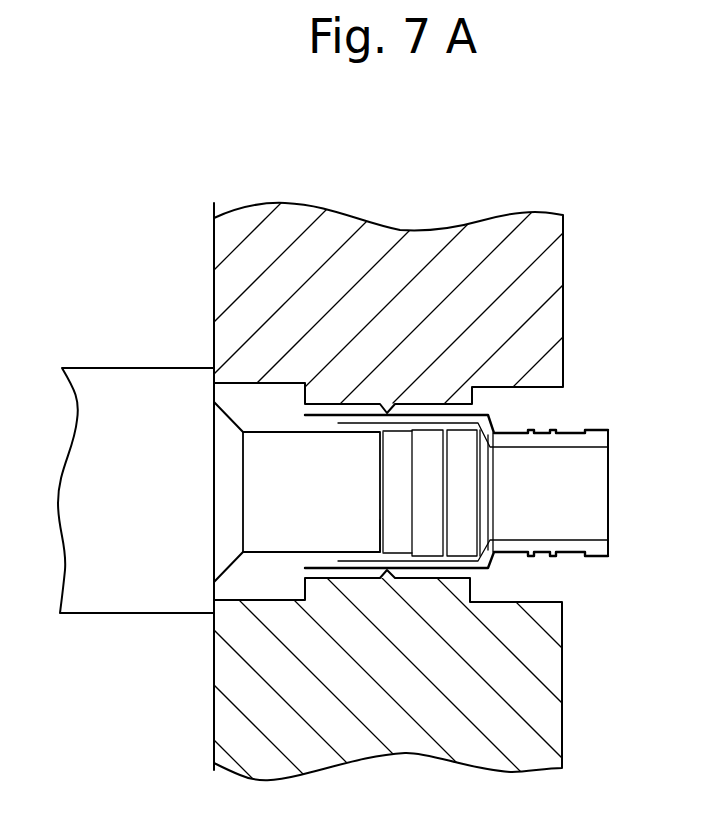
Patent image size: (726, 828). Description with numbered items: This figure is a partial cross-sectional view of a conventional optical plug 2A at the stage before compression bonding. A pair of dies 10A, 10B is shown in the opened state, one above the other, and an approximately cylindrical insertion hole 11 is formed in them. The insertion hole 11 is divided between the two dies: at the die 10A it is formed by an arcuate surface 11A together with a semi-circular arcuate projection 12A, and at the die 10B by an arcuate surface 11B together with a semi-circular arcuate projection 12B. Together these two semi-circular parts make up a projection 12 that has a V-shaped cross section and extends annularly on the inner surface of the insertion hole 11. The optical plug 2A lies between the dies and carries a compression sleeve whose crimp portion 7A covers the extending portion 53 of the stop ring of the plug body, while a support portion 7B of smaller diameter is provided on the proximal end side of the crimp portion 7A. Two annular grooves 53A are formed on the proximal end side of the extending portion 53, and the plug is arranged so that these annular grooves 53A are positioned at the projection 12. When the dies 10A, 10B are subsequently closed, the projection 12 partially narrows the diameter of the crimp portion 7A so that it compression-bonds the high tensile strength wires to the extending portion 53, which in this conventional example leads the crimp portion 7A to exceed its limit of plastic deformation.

The optical plug 2A is at (586, 497).
The crimp portion 7A is at (470, 568).
The support portion 7B is at (596, 432).
The die 10A is at (556, 248).
The die 10B is at (553, 706).
The insertion hole 11 is at (333, 404).
The arcuate surface 11A is at (338, 408).
The arcuate surface 11B is at (317, 562).
The projection 12 is at (385, 404).
The semi-circular arcuate projection 12A is at (393, 404).
The semi-circular arcuate projection 12B is at (347, 567).
The extending portion 53 is at (283, 520).
The annular groove 53A is at (393, 542).